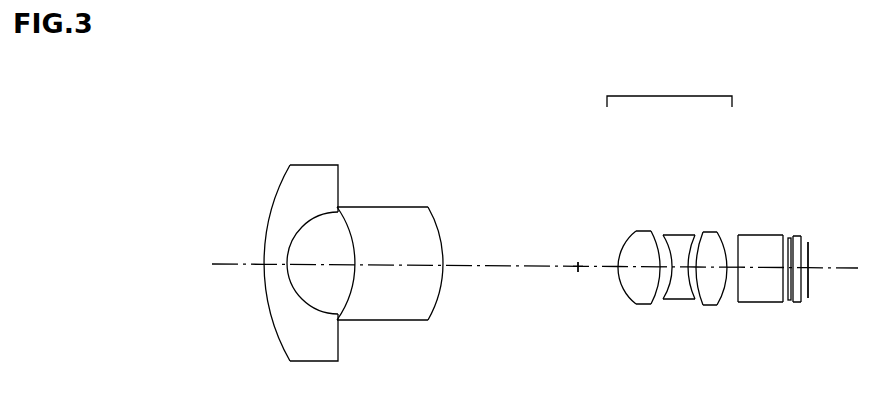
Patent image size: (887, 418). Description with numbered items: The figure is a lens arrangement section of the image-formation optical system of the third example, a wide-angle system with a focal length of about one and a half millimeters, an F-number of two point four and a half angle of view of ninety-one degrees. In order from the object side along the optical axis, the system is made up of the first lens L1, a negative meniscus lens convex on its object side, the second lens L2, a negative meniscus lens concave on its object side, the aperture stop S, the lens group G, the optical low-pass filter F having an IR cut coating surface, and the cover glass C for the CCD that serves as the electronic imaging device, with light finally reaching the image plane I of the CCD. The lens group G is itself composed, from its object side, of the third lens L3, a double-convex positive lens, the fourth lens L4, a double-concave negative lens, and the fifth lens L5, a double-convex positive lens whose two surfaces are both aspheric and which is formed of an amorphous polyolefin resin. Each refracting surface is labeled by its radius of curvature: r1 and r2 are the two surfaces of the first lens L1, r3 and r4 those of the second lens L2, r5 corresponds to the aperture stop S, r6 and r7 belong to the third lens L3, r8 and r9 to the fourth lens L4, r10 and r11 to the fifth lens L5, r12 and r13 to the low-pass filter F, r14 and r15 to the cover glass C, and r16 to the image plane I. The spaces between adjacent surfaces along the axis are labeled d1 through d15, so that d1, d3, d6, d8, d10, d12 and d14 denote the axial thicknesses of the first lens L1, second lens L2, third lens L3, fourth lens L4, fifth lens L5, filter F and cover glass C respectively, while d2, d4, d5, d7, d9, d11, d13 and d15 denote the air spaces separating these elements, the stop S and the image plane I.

The first lens L1 is at (297, 230).
The second lens L2 is at (390, 233).
The third lens L3 is at (628, 230).
The fourth lens L4 is at (673, 220).
The fifth lens L5 is at (716, 217).
The lens group G is at (669, 88).
The aperture stop S is at (578, 296).
The optical low-pass filter F is at (763, 277).
The cover glass C is at (811, 278).
The image plane I is at (833, 257).
The radius of curvature of first lens surface r1 is at (277, 192).
The radius of curvature of second lens surface r2 is at (311, 215).
The radius of curvature of third lens surface r3 is at (352, 230).
The radius of curvature of fourth lens surface r4 is at (438, 223).
The radius of curvature of fifth surface r5 is at (578, 240).
The radius of curvature of sixth lens surface r6 is at (622, 243).
The radius of curvature of seventh lens surface r7 is at (645, 244).
The radius of curvature of eighth lens surface r8 is at (665, 248).
The radius of curvature of ninth lens surface r9 is at (680, 245).
The radius of curvature of tenth lens surface r10 is at (697, 243).
The radius of curvature of eleventh lens surface r11 is at (724, 242).
The radius of curvature of twelfth surface r12 is at (738, 245).
The radius of curvature of thirteenth surface r13 is at (790, 242).
The radius of curvature of fourteenth surface r14 is at (797, 240).
The radius of curvature of fifteenth surface r15 is at (809, 240).
The radius of curvature of sixteenth surface r16 is at (814, 244).
The space between first and second surfaces d1 is at (283, 271).
The space between second and third surfaces d2 is at (319, 282).
The space between third and fourth surfaces d3 is at (399, 282).
The space between fourth and fifth surfaces d4 is at (510, 282).
The space between fifth and sixth surfaces d5 is at (598, 284).
The space between sixth and seventh surfaces d6 is at (639, 285).
The space between seventh and eighth surfaces d7 is at (660, 303).
The space between eighth and ninth surfaces d8 is at (677, 300).
The space between ninth and tenth surfaces d9 is at (697, 300).
The space between tenth and eleventh surfaces d10 is at (712, 306).
The space between eleventh and twelfth surfaces d11 is at (732, 304).
The space between twelfth and thirteenth surfaces d12 is at (760, 283).
The space between thirteenth and fourteenth surfaces d13 is at (788, 303).
The space between fourteenth and fifteenth surfaces d14 is at (803, 303).
The space between fifteenth and sixteenth surfaces d15 is at (808, 303).